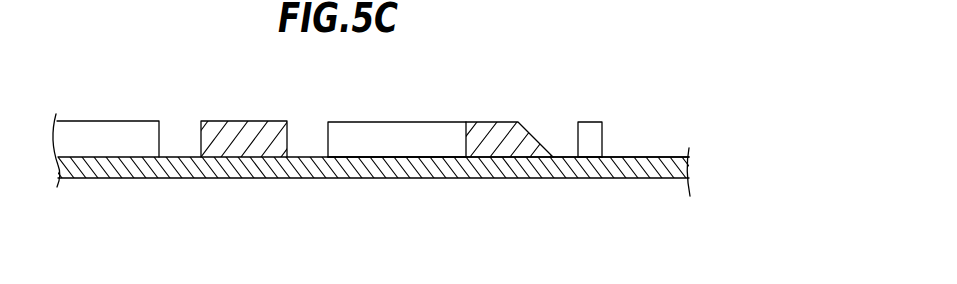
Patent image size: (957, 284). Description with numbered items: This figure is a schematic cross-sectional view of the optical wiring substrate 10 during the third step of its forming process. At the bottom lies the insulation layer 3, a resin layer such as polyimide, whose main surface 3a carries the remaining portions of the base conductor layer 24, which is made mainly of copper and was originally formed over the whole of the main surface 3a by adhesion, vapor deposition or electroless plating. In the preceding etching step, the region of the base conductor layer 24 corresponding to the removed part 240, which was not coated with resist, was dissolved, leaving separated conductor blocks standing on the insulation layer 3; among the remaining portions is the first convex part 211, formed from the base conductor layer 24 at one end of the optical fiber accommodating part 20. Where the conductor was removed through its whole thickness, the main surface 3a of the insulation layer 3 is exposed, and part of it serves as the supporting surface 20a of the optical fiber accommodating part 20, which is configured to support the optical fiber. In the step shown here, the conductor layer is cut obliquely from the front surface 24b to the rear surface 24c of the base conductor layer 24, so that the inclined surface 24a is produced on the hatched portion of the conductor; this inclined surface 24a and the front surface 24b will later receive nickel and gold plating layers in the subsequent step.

The optical wiring substrate 10 is at (733, 77).
The optical fiber accommodating part 20 is at (622, 150).
The supporting surface 20a is at (655, 157).
The insulation layer 3 is at (150, 170).
The main surface 3a is at (350, 158).
The removed part 240 is at (178, 135).
The base conductor layer 24 is at (415, 132).
The inclined surface 24a is at (532, 137).
The front surface 24b is at (477, 122).
The rear surface 24c is at (412, 162).
The first convex part 211 is at (590, 152).